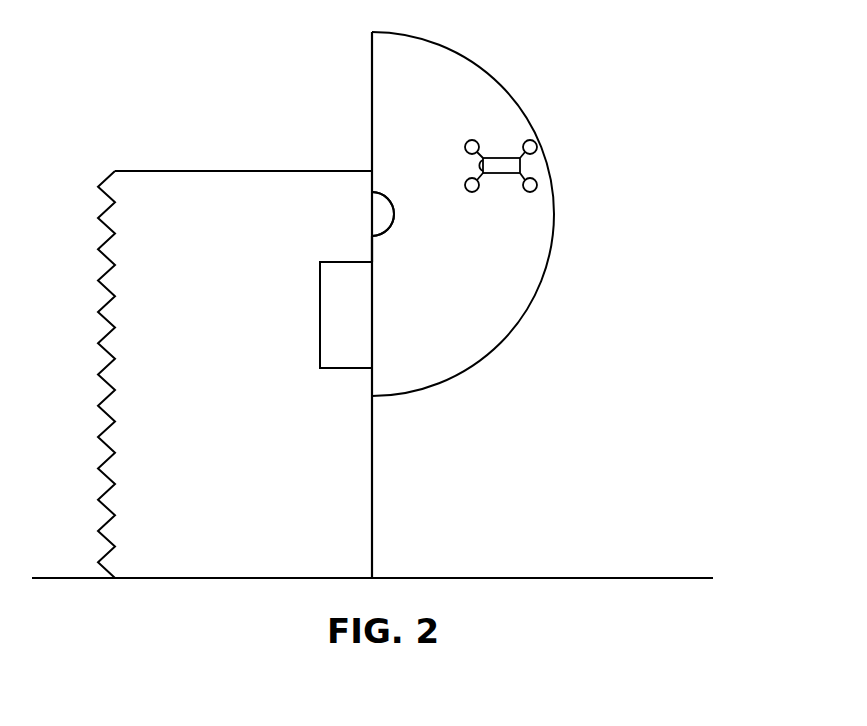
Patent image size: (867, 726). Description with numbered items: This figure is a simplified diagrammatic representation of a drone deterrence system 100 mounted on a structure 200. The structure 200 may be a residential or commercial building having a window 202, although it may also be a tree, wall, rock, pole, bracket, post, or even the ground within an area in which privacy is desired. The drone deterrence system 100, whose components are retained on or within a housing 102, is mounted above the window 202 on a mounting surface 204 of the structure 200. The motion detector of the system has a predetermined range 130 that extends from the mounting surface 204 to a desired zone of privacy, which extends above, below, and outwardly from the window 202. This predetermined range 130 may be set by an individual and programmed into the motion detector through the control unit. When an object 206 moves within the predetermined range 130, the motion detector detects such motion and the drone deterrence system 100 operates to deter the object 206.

The drone deterrence system 100 is at (388, 183).
The housing 102 is at (394, 216).
The predetermined range 130 is at (450, 47).
The structure 200 is at (232, 171).
The window 202 is at (375, 312).
The mounting surface 204 is at (375, 252).
The object 206 is at (503, 158).